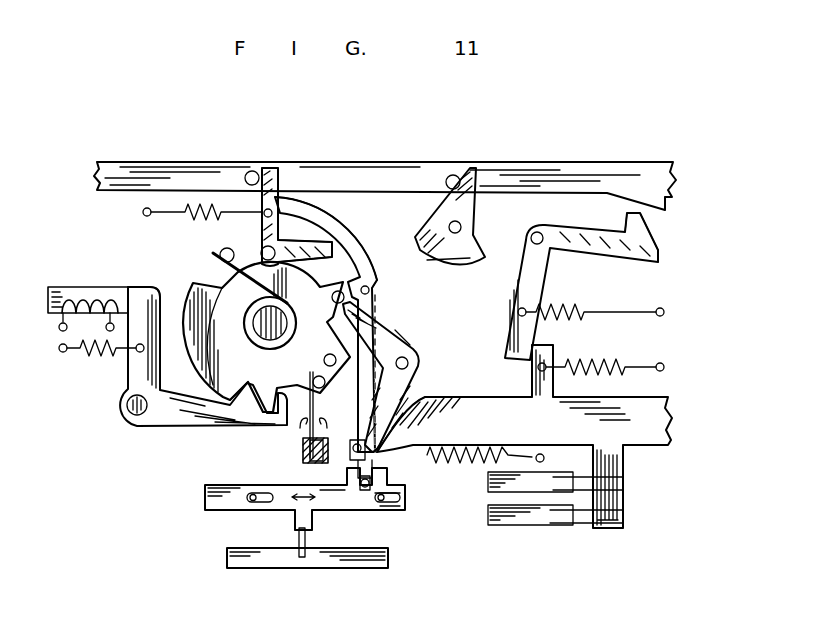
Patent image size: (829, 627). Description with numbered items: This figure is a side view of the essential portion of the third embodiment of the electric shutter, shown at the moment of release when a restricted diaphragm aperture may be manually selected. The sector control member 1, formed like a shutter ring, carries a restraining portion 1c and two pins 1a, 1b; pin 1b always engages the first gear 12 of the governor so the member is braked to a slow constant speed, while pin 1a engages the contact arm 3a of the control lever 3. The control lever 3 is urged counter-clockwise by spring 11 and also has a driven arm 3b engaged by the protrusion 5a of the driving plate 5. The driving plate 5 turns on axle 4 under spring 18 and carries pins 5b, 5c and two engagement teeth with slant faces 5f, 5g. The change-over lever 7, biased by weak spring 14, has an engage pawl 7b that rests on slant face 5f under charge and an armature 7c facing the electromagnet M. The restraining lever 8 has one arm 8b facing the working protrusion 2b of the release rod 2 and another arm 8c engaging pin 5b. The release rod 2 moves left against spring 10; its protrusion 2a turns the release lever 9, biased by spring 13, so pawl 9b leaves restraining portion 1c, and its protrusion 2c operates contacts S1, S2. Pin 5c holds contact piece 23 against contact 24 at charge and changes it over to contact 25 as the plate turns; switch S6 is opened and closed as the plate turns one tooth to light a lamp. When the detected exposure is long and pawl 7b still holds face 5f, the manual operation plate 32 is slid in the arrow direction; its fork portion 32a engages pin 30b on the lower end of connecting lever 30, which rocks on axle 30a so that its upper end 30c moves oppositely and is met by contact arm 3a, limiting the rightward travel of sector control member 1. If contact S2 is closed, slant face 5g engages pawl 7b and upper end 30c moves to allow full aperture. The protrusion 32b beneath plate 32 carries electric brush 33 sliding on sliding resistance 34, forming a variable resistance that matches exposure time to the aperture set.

The sector control member 1 is at (375, 175).
The pin 1a is at (248, 172).
The pin 1b is at (452, 175).
The restraining portion 1c is at (663, 200).
The control lever 3 is at (262, 226).
The contact arm 3a is at (272, 168).
The driven arm 3b is at (328, 243).
The connecting lever 30 is at (366, 268).
The axle 30a is at (370, 291).
The pin 30b is at (372, 486).
The upper end 30c is at (293, 200).
The driving plate 5 is at (196, 342).
The axle 4 is at (250, 318).
The protrusion 5a is at (370, 276).
The pin 5b is at (326, 357).
The pin 5c is at (314, 380).
The slant face 5f is at (253, 420).
The slant face 5g is at (187, 423).
The spring 18 is at (228, 268).
The change-over lever 7 is at (152, 425).
The engage pawl 7b is at (265, 430).
The armature 7c is at (130, 292).
The electromagnet M is at (75, 288).
The weak spring 14 is at (83, 357).
The spring 11 is at (190, 205).
The contact piece 23 is at (316, 400).
The contact 25 is at (318, 430).
The contact 24 is at (302, 444).
The switch S6 is at (326, 459).
The restraining lever 8 is at (396, 346).
The arm 8b is at (380, 452).
The arm 8c is at (376, 322).
The release rod 2 is at (498, 400).
The protrusion 2a is at (555, 352).
The working protrusion 2b is at (430, 398).
The protrusion 2c is at (612, 465).
The contact S2 is at (555, 470).
The contact S1 is at (555, 531).
The release lever 9 is at (540, 256).
The pawl 9b is at (632, 226).
The spring 13 is at (580, 312).
The spring 10 is at (625, 367).
The first gear 12 is at (465, 240).
The manual operation plate 32 is at (200, 500).
The fork portion 32a is at (390, 512).
The protrusion 32b is at (312, 518).
The electric brush 33 is at (298, 542).
The sliding resistance 34 is at (345, 569).